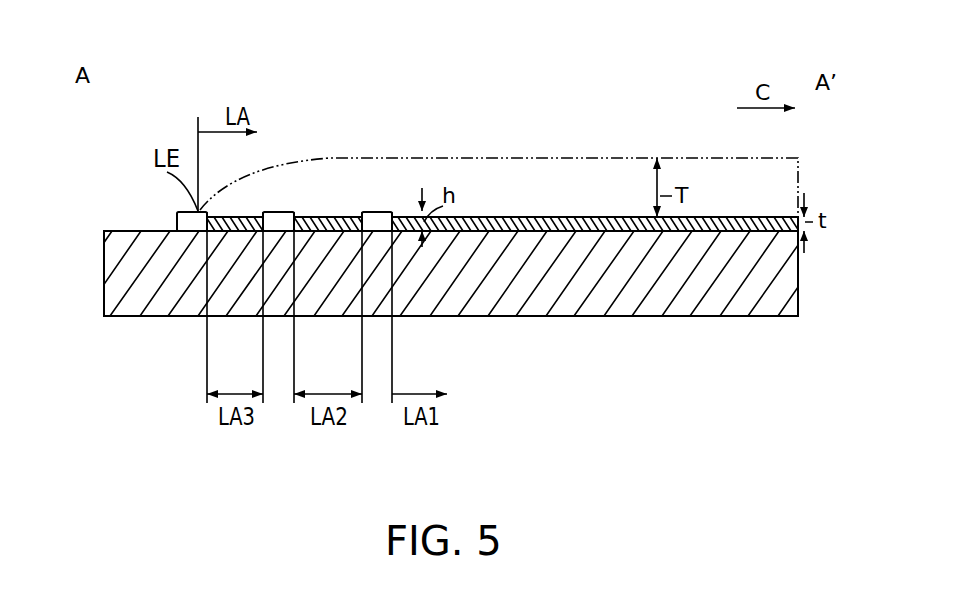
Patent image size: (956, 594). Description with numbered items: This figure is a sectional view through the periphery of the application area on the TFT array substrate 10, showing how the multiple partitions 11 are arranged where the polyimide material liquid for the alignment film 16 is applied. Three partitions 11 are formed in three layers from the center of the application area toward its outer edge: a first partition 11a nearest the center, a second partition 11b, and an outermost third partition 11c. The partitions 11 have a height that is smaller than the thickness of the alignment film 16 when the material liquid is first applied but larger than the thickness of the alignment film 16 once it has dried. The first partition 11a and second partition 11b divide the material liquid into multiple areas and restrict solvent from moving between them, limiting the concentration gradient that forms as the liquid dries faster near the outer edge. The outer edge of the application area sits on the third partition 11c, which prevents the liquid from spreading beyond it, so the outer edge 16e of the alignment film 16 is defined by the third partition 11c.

The TFT array substrate 10 is at (600, 300).
The partitions 11 is at (261, 154).
The first partition 11a is at (378, 219).
The second partition 11b is at (277, 219).
The third partition 11c is at (184, 223).
The alignment film 16 is at (527, 222).
The outer edge of the alignment film 16e is at (206, 245).